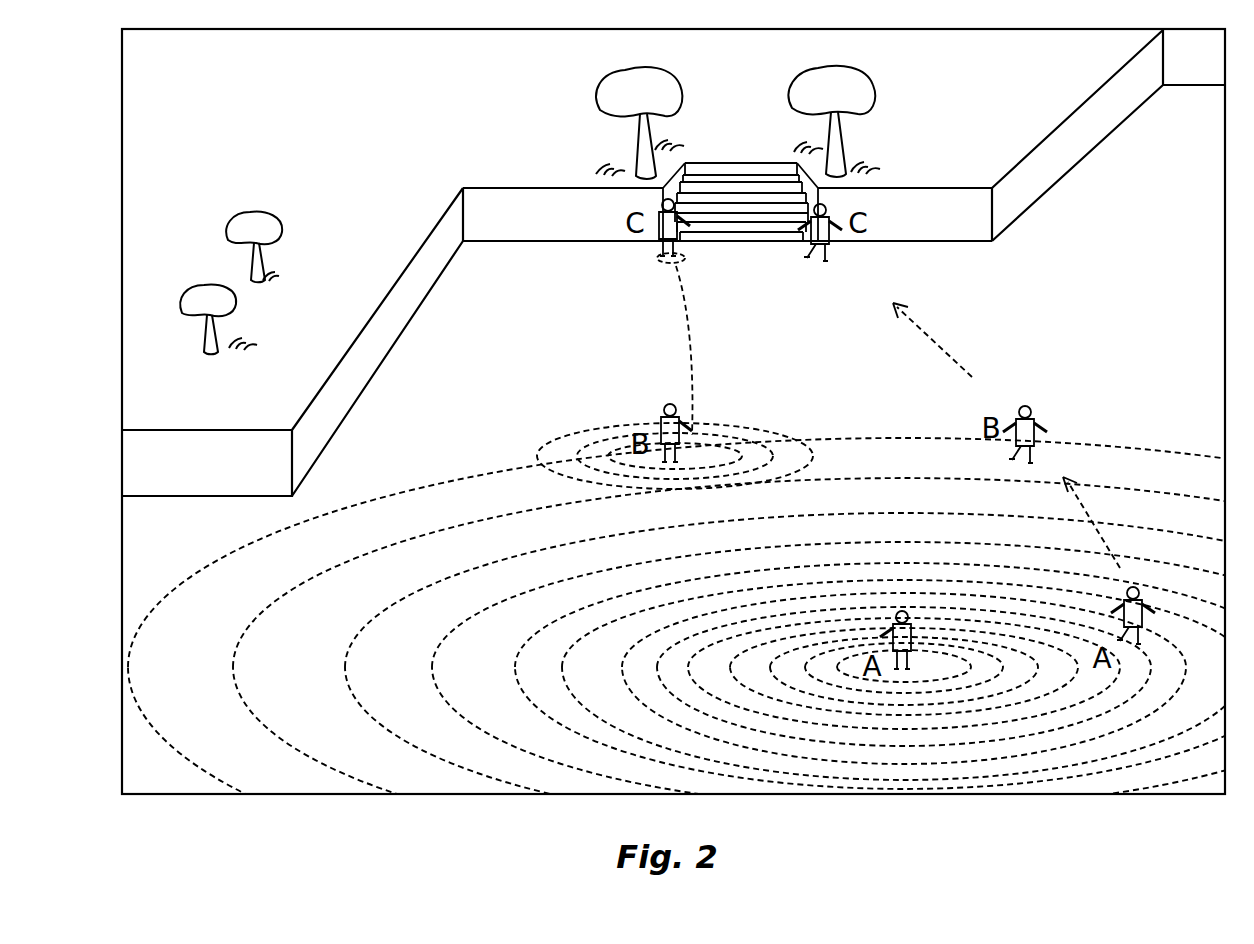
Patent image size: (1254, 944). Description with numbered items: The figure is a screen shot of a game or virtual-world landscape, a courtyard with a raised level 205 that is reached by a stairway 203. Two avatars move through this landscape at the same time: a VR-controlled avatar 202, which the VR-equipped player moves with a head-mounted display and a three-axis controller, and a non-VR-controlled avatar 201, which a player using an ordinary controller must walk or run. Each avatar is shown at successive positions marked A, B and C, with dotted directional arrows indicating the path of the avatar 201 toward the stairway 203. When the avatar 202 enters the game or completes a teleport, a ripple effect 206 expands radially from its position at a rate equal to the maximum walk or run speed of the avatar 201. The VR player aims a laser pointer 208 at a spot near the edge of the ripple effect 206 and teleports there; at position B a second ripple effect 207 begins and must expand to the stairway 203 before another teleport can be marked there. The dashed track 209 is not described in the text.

The non-VR-controlled avatar 201 is at (833, 233).
The VR-controlled avatar 202 is at (662, 230).
The stairway 203 is at (718, 244).
The raised level 205 is at (533, 158).
The ripple effect 206 is at (480, 474).
The second ripple effect 207 is at (740, 425).
The laser pointer 208 is at (857, 553).
The movement path 209 is at (688, 358).